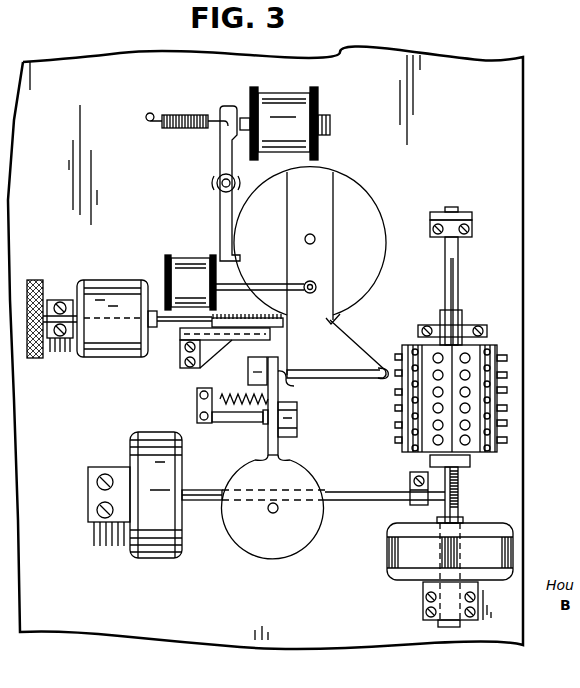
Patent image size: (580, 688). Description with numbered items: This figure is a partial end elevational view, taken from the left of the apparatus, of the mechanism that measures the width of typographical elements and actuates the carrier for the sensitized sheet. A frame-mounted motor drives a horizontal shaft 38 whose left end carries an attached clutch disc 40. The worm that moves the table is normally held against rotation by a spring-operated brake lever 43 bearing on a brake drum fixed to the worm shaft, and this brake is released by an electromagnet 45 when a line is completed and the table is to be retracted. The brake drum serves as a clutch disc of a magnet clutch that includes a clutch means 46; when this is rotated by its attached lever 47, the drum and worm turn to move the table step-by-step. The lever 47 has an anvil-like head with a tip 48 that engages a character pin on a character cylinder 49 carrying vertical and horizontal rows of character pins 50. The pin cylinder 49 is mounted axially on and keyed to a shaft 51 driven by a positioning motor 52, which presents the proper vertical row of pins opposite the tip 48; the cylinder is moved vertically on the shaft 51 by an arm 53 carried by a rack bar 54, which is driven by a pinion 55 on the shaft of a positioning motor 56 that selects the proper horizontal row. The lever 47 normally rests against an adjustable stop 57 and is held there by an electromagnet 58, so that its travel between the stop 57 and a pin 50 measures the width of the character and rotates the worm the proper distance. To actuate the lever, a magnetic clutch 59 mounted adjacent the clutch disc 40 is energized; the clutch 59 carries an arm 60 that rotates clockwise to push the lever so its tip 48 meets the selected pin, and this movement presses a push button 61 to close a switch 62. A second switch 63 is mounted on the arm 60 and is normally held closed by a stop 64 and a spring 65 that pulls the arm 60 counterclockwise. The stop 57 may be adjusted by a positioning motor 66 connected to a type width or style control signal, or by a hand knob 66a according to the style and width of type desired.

The horizontal shaft 38 is at (277, 512).
The clutch disc 40 is at (315, 471).
The brake lever 43 is at (222, 150).
The electromagnet 45 is at (290, 97).
The clutch means 46 is at (358, 196).
The lever 47 is at (336, 330).
The tip 48 is at (385, 370).
The character cylinder 49 is at (412, 452).
The character pins 50 is at (507, 398).
The shaft 51 is at (458, 273).
The motor 52 is at (392, 550).
The arm 53 is at (470, 462).
The rack bar 54 is at (460, 483).
The pinion 55 is at (460, 505).
The positioning motor 56 is at (157, 558).
The adjustable stop 57 is at (283, 340).
The electromagnet 58 is at (190, 264).
The magnetic clutch 59 is at (242, 540).
The arm 60 is at (270, 438).
The push button 61 is at (286, 379).
The switch 62 is at (255, 363).
The second switch 63 is at (297, 427).
The stop 64 is at (232, 424).
The spring 65 is at (236, 393).
The motor 66 is at (113, 281).
The hand knob 66a is at (36, 358).